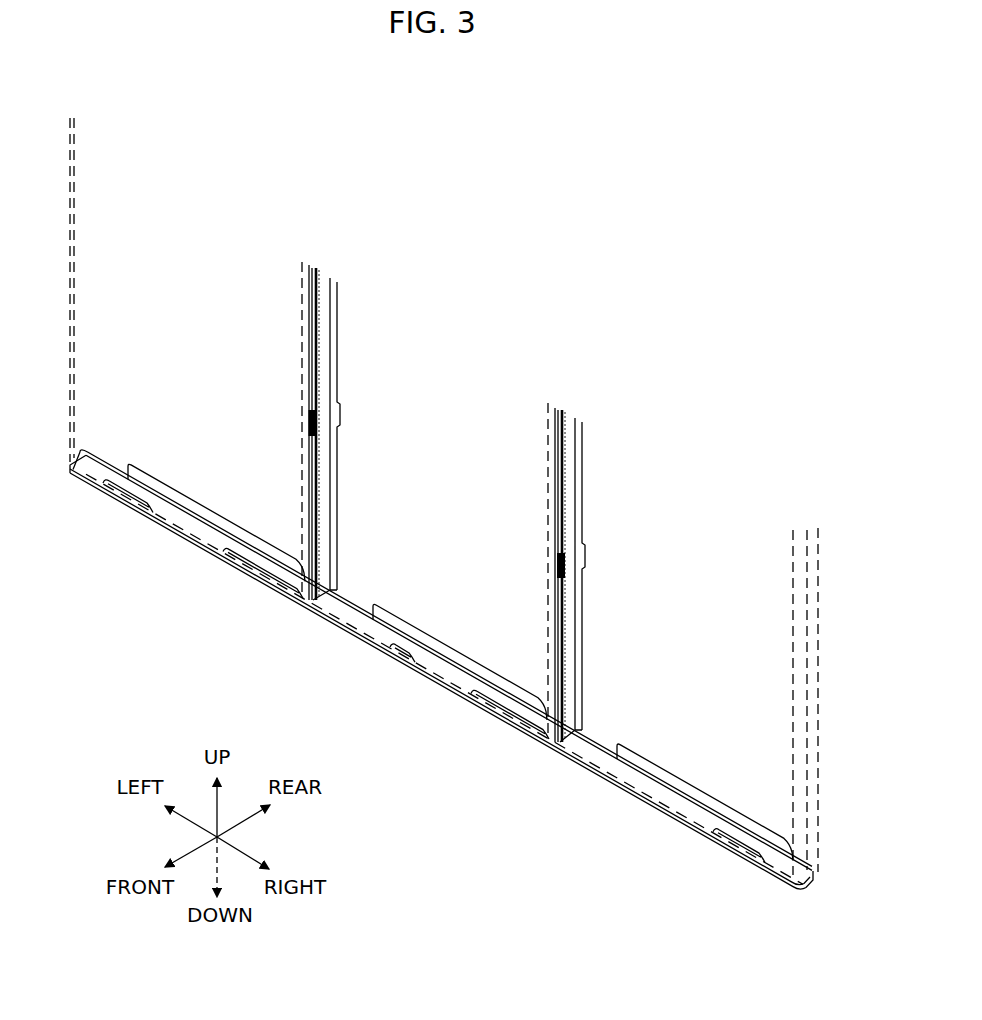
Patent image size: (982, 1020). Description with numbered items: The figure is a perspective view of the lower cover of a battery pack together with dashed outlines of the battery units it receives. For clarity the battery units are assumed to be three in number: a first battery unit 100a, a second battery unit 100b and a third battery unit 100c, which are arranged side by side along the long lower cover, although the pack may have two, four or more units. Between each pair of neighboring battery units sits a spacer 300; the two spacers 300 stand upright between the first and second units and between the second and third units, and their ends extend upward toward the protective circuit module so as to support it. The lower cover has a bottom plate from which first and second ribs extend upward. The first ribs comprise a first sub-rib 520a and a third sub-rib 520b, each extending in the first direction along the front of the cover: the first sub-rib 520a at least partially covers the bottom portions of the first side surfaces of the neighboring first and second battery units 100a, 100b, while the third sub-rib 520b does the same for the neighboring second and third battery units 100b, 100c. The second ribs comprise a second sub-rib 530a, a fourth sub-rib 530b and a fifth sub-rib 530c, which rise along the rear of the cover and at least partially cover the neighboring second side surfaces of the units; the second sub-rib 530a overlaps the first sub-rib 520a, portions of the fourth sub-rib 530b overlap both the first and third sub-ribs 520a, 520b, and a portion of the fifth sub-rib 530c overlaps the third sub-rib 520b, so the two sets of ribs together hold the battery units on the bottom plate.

The first battery unit 100a is at (183, 272).
The second battery unit 100b is at (428, 415).
The third battery unit 100c is at (672, 548).
The spacer 300 is at (313, 262).
The first sub-rib 520a is at (273, 575).
The third sub-rib 520b is at (538, 735).
The second sub-rib 530a is at (203, 507).
The fourth sub-rib 530b is at (446, 647).
The fifth sub-rib 530c is at (692, 788).